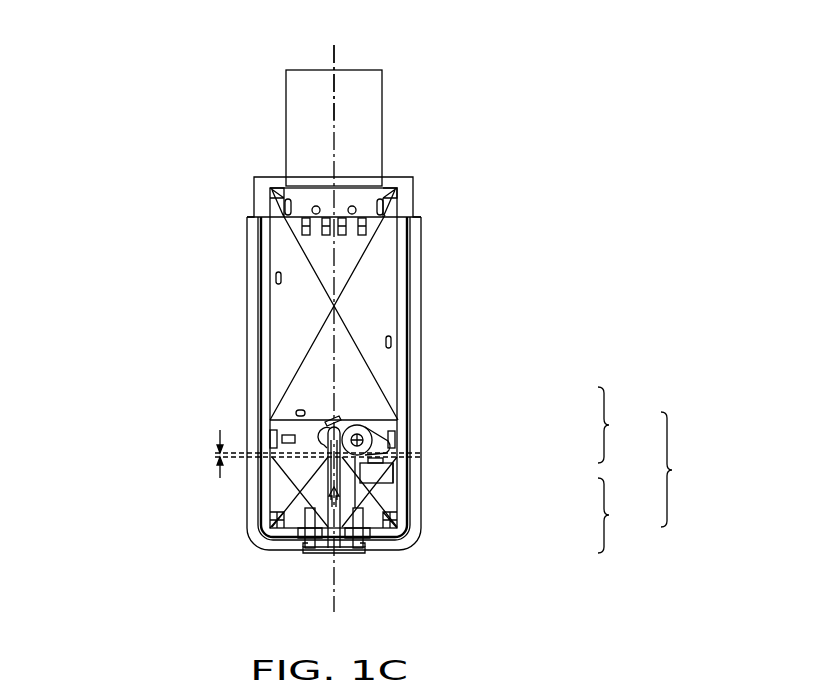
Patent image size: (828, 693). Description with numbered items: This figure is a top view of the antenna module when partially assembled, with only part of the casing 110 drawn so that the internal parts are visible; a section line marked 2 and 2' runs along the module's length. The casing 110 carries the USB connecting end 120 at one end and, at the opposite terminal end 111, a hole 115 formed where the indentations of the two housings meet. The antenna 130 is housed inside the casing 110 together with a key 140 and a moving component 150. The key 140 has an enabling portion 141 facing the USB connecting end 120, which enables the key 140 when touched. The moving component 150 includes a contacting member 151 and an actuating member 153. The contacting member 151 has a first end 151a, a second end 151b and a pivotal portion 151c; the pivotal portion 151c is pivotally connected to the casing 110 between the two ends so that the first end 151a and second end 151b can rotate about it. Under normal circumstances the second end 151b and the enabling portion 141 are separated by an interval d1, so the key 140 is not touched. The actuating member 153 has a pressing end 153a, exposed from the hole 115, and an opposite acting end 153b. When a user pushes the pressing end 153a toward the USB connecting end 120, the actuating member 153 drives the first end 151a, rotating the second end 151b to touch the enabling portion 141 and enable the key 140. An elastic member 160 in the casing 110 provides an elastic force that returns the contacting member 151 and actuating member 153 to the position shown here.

The section line 2 is at (335, 335).
The section line 2' is at (338, 66).
The casing 110 is at (253, 272).
The terminal end 111 is at (237, 540).
The hole 115 is at (301, 555).
The USB connecting end 120 is at (298, 102).
The antenna 130 is at (280, 483).
The key 140 is at (374, 488).
The enabling portion 141 is at (395, 471).
The moving component 150 is at (696, 469).
The contacting member 151 is at (627, 425).
The first end 151a is at (347, 419).
The second end 151b is at (396, 447).
The pivotal portion 151c is at (366, 427).
The actuating member 153 is at (627, 515).
The pressing end 153a is at (350, 557).
The acting end 153b is at (385, 483).
The elastic member 160 is at (333, 418).
The interval d1 is at (301, 454).